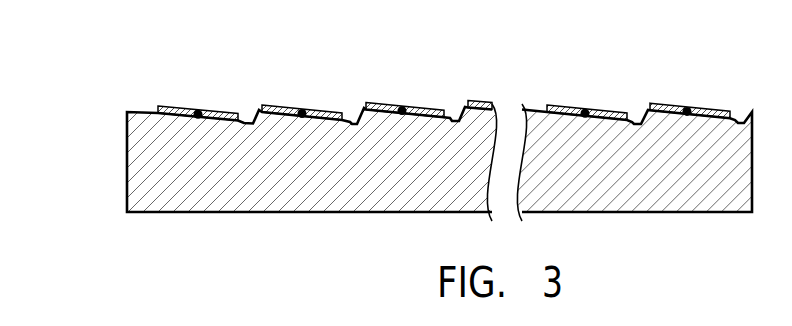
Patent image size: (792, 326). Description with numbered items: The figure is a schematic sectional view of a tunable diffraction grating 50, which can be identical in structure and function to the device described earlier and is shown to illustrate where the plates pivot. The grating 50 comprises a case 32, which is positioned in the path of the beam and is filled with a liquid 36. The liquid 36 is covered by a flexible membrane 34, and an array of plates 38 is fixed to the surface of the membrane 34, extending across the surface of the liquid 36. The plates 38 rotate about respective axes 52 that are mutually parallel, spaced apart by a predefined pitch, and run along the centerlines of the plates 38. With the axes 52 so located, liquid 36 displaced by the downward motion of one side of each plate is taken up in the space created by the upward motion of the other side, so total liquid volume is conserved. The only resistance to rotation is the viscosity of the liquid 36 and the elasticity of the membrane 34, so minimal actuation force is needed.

The case 32 is at (127, 153).
The flexible membrane 34 is at (354, 122).
The liquid 36 is at (340, 167).
The plates 38 is at (159, 106).
The tunable diffraction grating 50 is at (146, 72).
The axes of rotation 52 is at (198, 110).